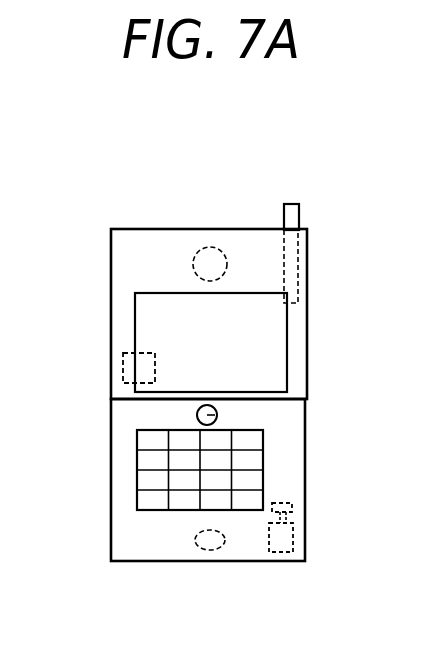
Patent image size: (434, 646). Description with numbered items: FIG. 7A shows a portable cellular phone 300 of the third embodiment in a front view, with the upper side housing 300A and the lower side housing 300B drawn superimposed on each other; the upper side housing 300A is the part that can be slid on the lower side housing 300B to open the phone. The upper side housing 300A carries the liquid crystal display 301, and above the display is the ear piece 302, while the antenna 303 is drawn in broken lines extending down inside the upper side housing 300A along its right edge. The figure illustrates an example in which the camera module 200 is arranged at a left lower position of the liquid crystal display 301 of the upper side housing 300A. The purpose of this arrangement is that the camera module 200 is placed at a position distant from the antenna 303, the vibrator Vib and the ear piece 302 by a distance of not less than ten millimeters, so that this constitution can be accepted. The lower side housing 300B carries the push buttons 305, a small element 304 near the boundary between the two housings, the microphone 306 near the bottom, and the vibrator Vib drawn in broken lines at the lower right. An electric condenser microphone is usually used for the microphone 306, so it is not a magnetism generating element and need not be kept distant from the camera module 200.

The mobile phone terminal 300 is at (258, 308).
The upper side housing 300A is at (308, 317).
The lower side housing 300B is at (306, 466).
The liquid crystal display 301 is at (290, 360).
The ear piece 302 is at (218, 257).
The antenna 303 is at (293, 215).
The hinge / key 304 is at (217, 415).
The push buttons 305 is at (152, 459).
The microphone 306 is at (204, 552).
The camera module 200 is at (120, 362).
The vibrator Vib is at (295, 543).